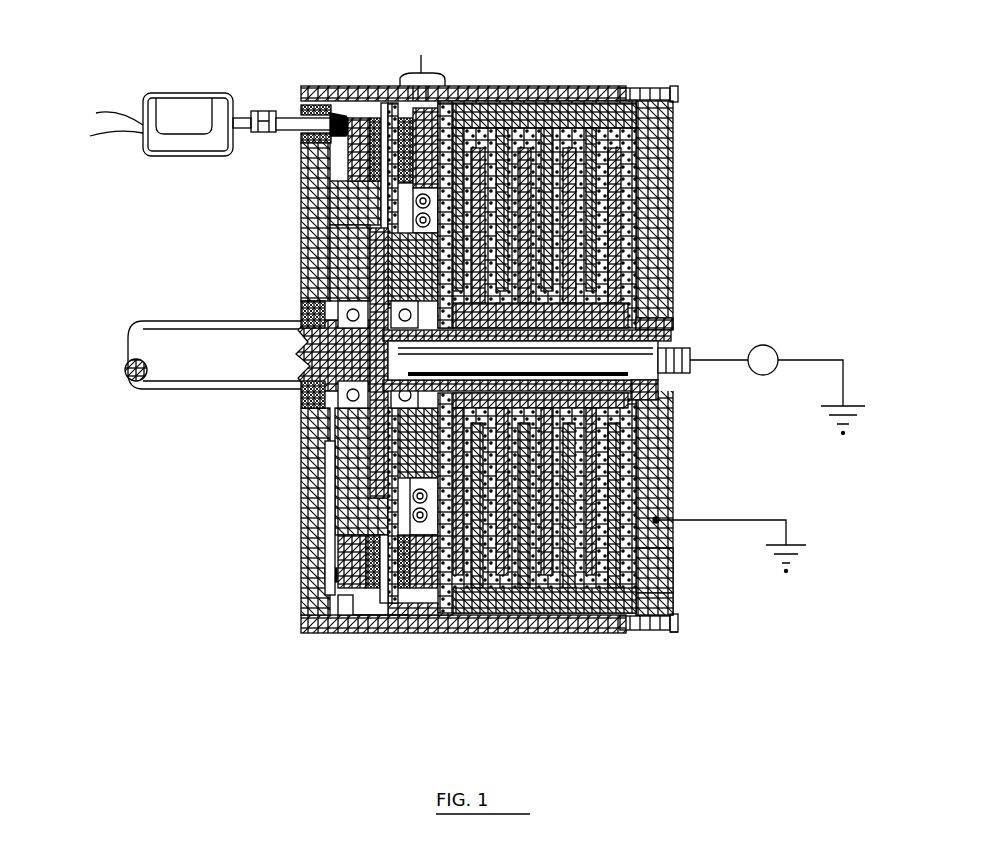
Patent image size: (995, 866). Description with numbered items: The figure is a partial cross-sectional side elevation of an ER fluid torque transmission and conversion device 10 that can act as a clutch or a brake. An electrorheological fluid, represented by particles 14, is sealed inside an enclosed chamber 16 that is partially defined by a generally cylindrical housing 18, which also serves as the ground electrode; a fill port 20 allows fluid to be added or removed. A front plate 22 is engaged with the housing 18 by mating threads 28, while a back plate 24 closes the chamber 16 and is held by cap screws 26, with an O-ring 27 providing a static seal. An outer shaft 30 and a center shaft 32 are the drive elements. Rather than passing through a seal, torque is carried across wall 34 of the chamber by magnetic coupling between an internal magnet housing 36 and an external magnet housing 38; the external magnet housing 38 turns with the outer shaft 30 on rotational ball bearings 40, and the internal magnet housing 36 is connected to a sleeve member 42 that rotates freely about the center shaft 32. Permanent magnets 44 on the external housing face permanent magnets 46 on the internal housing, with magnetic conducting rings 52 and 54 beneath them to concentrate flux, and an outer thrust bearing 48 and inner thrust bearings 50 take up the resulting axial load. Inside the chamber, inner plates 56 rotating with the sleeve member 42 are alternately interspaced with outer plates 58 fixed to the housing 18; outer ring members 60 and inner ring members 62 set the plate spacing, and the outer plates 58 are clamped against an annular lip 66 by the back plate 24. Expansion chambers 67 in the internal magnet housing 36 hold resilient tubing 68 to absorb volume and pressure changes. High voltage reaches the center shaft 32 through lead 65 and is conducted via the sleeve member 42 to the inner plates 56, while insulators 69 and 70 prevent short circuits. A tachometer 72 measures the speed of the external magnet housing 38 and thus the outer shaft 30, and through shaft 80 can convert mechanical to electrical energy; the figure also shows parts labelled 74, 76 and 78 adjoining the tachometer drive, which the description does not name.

The ER fluid torque transmission and conversion device 10 is at (168, 477).
The particles 14 is at (628, 164).
The enclosed chamber 16 is at (655, 560).
The housing 18 is at (382, 627).
The fill port 20 is at (430, 78).
The front plate 22 is at (300, 427).
The back plate 24 is at (660, 590).
The cap screws 26 is at (650, 85).
The O-ring 27 is at (667, 630).
The mating threads 28 is at (305, 627).
The outer shaft 30 is at (194, 357).
The center shaft 32 is at (412, 365).
The wall 34 is at (352, 230).
The internal magnet housing 36 is at (398, 498).
The external magnet housing 38 is at (322, 470).
The rotational ball bearings 40 is at (300, 305).
The sleeve member 42 is at (655, 317).
The permanent magnets 44 is at (362, 93).
The permanent magnets 46 is at (373, 93).
The outer thrust bearing 48 is at (345, 300).
The inner thrust bearings 50 is at (392, 299).
The magnetic conducting ring 52 is at (393, 627).
The magnetic conducting ring 54 is at (342, 627).
The inner plates 56 is at (475, 96).
The outer plates 58 is at (458, 612).
The outer ring members 60 is at (470, 612).
The inner ring members 62 is at (535, 285).
The lead 65 is at (683, 352).
The annular lip 66 is at (462, 92).
The expansion chambers 67 is at (360, 545).
The resilient tubing 68 is at (352, 514).
The insulator 69 is at (660, 372).
The insulator 70 is at (312, 389).
The tachometer 72 is at (285, 100).
The motor shaft 74 is at (300, 95).
The coupling 76 is at (318, 80).
The drive shaft 78 is at (298, 134).
The shaft 80 is at (288, 124).